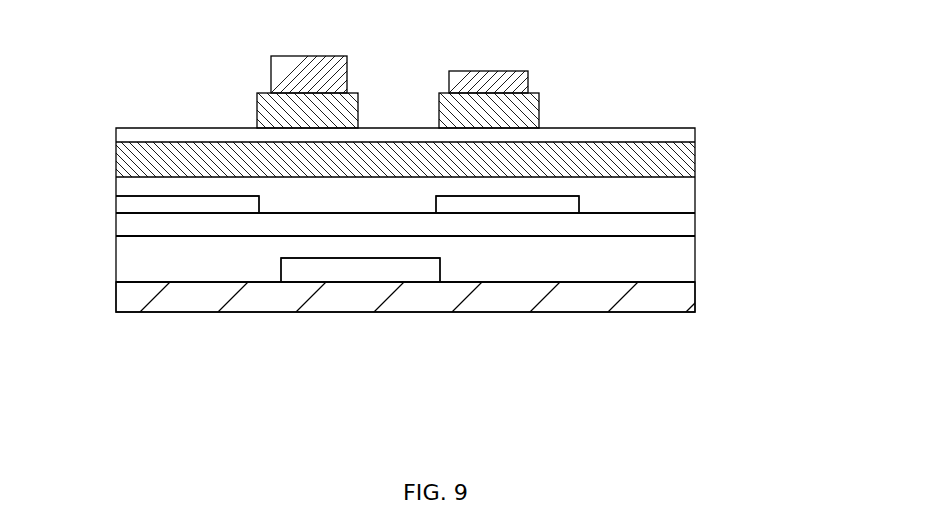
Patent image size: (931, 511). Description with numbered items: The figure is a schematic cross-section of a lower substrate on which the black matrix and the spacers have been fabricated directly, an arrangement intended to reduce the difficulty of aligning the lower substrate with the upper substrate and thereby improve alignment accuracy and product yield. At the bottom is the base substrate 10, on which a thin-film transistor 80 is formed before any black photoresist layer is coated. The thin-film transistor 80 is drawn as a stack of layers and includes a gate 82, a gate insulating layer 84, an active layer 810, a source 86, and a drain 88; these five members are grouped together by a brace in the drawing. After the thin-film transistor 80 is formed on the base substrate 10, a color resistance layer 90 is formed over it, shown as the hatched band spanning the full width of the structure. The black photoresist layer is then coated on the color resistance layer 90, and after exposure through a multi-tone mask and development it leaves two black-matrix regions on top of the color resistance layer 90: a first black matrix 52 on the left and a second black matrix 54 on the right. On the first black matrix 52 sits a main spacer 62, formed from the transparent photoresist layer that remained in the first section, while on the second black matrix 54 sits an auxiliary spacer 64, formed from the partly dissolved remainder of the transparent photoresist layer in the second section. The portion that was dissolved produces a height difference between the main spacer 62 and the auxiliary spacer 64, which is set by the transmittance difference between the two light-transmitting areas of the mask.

The base substrate 10 is at (682, 298).
The color resistance layer 90 is at (685, 163).
The first black matrix 52 is at (265, 113).
The main spacer 62 is at (327, 70).
The second black matrix 54 is at (532, 110).
The auxiliary spacer 64 is at (500, 80).
The thin-film transistor 80 is at (687, 342).
The drain 88 is at (516, 203).
The gate insulating layer 84 is at (465, 267).
The gate 82 is at (377, 272).
The source 86 is at (195, 206).
The active layer 810 is at (167, 225).